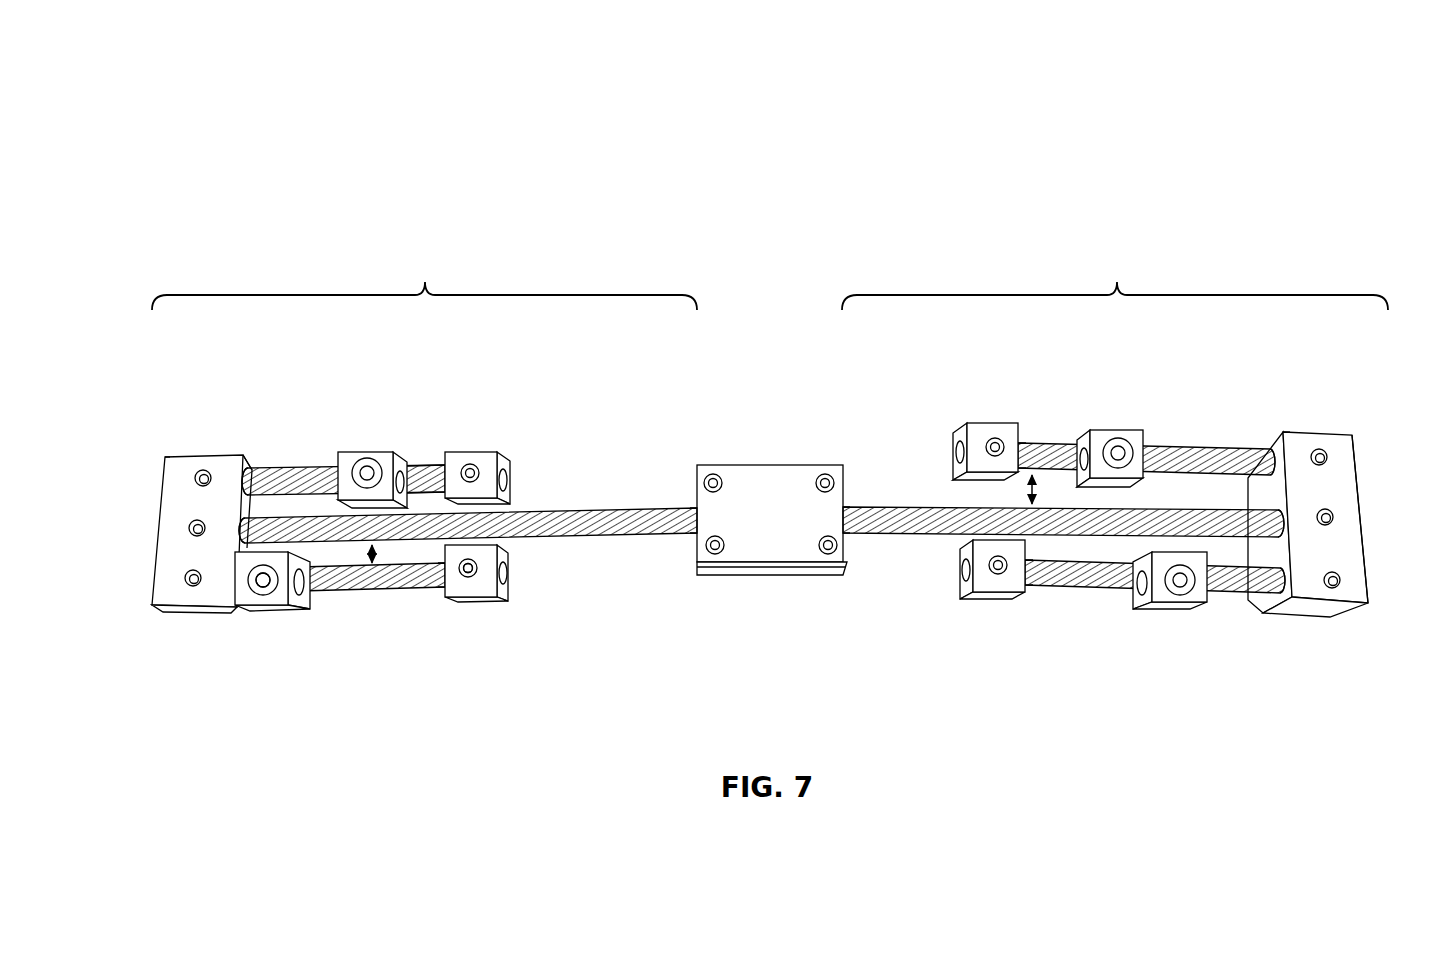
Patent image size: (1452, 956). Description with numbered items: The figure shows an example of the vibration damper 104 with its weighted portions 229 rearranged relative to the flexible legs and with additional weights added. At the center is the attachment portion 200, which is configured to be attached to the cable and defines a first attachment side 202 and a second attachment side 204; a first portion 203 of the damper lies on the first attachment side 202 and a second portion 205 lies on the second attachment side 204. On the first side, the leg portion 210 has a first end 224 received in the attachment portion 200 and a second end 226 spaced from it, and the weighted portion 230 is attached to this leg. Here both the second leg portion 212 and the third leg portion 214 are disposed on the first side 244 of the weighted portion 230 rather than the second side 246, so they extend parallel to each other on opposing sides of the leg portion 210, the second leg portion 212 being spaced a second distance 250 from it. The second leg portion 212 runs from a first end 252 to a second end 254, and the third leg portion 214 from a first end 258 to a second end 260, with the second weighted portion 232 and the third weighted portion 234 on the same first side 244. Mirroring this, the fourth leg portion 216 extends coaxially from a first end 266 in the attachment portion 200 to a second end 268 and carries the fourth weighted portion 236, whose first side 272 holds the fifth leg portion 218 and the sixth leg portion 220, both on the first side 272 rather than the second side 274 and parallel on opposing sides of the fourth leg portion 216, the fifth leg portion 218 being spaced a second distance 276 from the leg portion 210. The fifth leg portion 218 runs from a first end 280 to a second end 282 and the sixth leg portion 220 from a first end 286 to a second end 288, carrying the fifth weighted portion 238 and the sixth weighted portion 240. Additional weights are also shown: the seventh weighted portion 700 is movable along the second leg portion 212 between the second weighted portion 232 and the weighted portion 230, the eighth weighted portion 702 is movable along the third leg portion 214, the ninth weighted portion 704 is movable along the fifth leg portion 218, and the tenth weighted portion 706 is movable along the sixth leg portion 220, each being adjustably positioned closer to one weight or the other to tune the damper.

The vibration damper 104 is at (208, 112).
The attachment portion 200 is at (792, 475).
The first attachment side 202 is at (883, 270).
The first portion 203 is at (1115, 280).
The second attachment side 204 is at (590, 260).
The second portion 205 is at (424, 279).
The leg portion 210 is at (880, 534).
The second leg portion 212 is at (1185, 449).
The third leg portion 214 is at (1103, 584).
The fourth leg portion 216 is at (591, 519).
The fifth leg portion 218 is at (385, 583).
The sixth leg portion 220 is at (327, 467).
The first end 224 is at (848, 506).
The second end 226 is at (1276, 516).
The weighted portions 229 is at (1226, 265).
The weighted portion 230 is at (1338, 435).
The second weighted portion 232 is at (977, 427).
The third weighted portion 234 is at (990, 583).
The fourth weighted portion 236 is at (178, 467).
The fifth weighted portion 238 is at (483, 597).
The sixth weighted portion 240 is at (492, 451).
The first side 244 is at (1281, 436).
The second side 246 is at (1363, 503).
The second distance 250 is at (1026, 488).
The first end 252 is at (1257, 448).
The second end 254 is at (1022, 442).
The first end 258 is at (1037, 584).
The second end 260 is at (1266, 601).
The first end 266 is at (692, 507).
The second end 268 is at (244, 526).
The first side 272 is at (241, 459).
The second side 274 is at (166, 469).
The second distance 276 is at (477, 570).
The first end 280 is at (443, 588).
The second end 282 is at (262, 588).
The first end 286 is at (438, 467).
The second end 288 is at (266, 470).
The seventh weighted portion 700 is at (1100, 431).
The eighth weighted portion 702 is at (1165, 599).
The ninth weighted portion 704 is at (272, 599).
The tenth weighted portion 706 is at (352, 454).